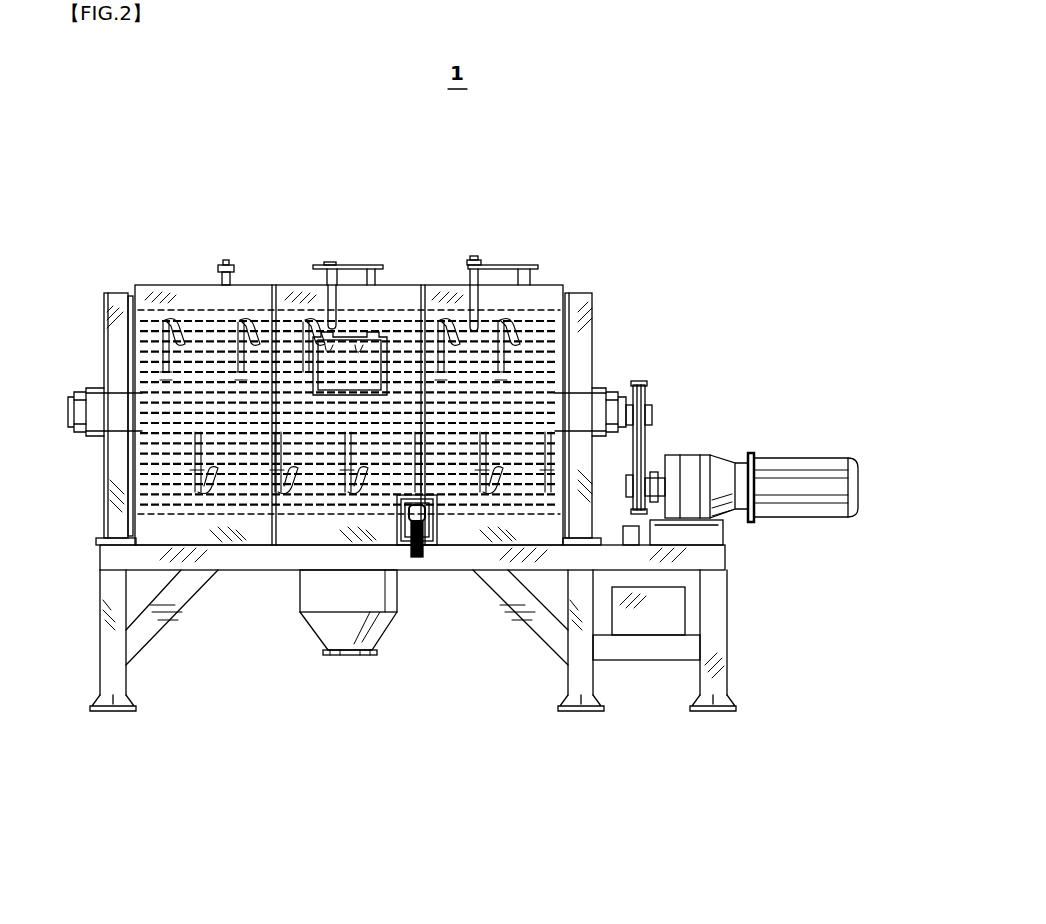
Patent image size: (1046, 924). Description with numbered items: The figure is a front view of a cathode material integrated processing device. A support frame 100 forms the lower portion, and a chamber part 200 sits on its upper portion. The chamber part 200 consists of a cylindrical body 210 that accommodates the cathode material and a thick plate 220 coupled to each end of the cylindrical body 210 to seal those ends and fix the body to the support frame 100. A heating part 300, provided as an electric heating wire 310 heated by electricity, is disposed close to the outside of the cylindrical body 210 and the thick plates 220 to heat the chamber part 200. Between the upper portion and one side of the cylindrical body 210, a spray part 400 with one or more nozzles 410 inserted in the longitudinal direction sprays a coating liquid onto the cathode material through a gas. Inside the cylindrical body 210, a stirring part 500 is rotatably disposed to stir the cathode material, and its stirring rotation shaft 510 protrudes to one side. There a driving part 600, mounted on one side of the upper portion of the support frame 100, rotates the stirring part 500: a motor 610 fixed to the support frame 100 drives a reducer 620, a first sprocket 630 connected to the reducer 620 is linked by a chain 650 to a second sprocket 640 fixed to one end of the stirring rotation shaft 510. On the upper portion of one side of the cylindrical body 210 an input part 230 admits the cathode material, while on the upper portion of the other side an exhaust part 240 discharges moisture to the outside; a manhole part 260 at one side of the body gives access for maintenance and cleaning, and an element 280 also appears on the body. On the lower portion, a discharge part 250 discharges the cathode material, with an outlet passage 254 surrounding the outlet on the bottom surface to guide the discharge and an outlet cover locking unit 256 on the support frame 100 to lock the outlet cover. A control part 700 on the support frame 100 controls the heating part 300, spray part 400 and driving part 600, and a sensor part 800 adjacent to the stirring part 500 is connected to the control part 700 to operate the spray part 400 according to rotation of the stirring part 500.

The support frame 100 is at (637, 668).
The chamber part 200 is at (188, 168).
The cylindrical body 210 is at (197, 285).
The thick plate 220 is at (108, 290).
The input part 230 is at (355, 267).
The exhaust part 240 is at (502, 265).
The discharge part 250 is at (351, 658).
The outlet passage 254 is at (310, 590).
The outlet cover locking unit 256 is at (440, 545).
The manhole part 260 is at (415, 330).
The upper cover plate 280 is at (542, 293).
The heating part 300 is at (538, 328).
The electric heating wire 310 is at (543, 360).
The spray part 400 is at (232, 260).
The nozzle 410 is at (215, 277).
The stirring part 500 is at (470, 327).
The stirring rotation shaft 510 is at (610, 393).
The driving part 600 is at (862, 447).
The motor 610 is at (796, 462).
The reducer 620 is at (713, 463).
The first sprocket 630 is at (653, 468).
The second sprocket 640 is at (642, 393).
The chain 650 is at (632, 448).
The control part 700 is at (662, 613).
The sensor part 800 is at (638, 530).